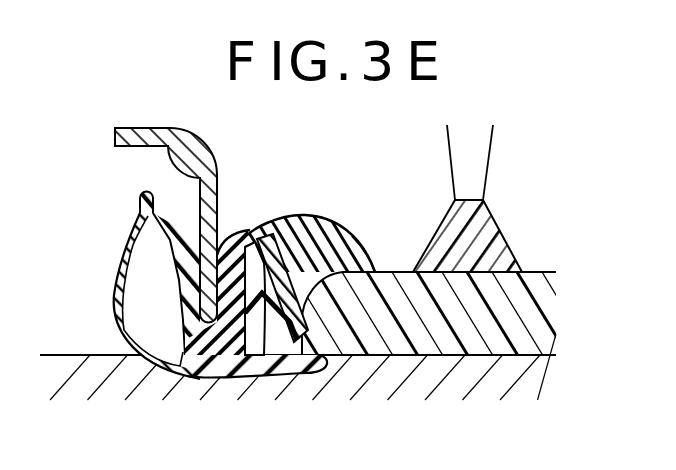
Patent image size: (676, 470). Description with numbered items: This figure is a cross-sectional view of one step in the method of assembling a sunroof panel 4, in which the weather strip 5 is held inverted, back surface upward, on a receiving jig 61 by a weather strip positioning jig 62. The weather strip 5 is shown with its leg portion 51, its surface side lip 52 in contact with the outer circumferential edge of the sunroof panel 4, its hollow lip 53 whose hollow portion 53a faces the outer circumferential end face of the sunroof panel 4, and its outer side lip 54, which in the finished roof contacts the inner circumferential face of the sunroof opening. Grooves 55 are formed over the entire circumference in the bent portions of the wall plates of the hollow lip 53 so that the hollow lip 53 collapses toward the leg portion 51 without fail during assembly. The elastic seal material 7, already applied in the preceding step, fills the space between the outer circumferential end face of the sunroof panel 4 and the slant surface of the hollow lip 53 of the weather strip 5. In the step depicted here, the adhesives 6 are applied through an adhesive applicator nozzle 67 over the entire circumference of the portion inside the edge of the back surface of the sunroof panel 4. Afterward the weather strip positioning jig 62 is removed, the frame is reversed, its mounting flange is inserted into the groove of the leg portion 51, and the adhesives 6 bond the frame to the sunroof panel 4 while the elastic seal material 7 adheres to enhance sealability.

The sunroof panel 4 is at (545, 272).
The weather strip 5 is at (206, 287).
The adhesives 6 is at (490, 238).
The elastic seal material 7 is at (355, 258).
The leg portion 51 is at (200, 233).
The surface side lip 52 is at (311, 363).
The hollow lip 53 is at (288, 243).
The hollow portion 53a is at (325, 250).
The outer side lip 54 is at (113, 280).
The grooves 55 is at (253, 240).
The receiving jig 61 is at (535, 381).
The weather strip positioning jig 62 is at (117, 126).
The adhesive applicator nozzle 67 is at (478, 153).